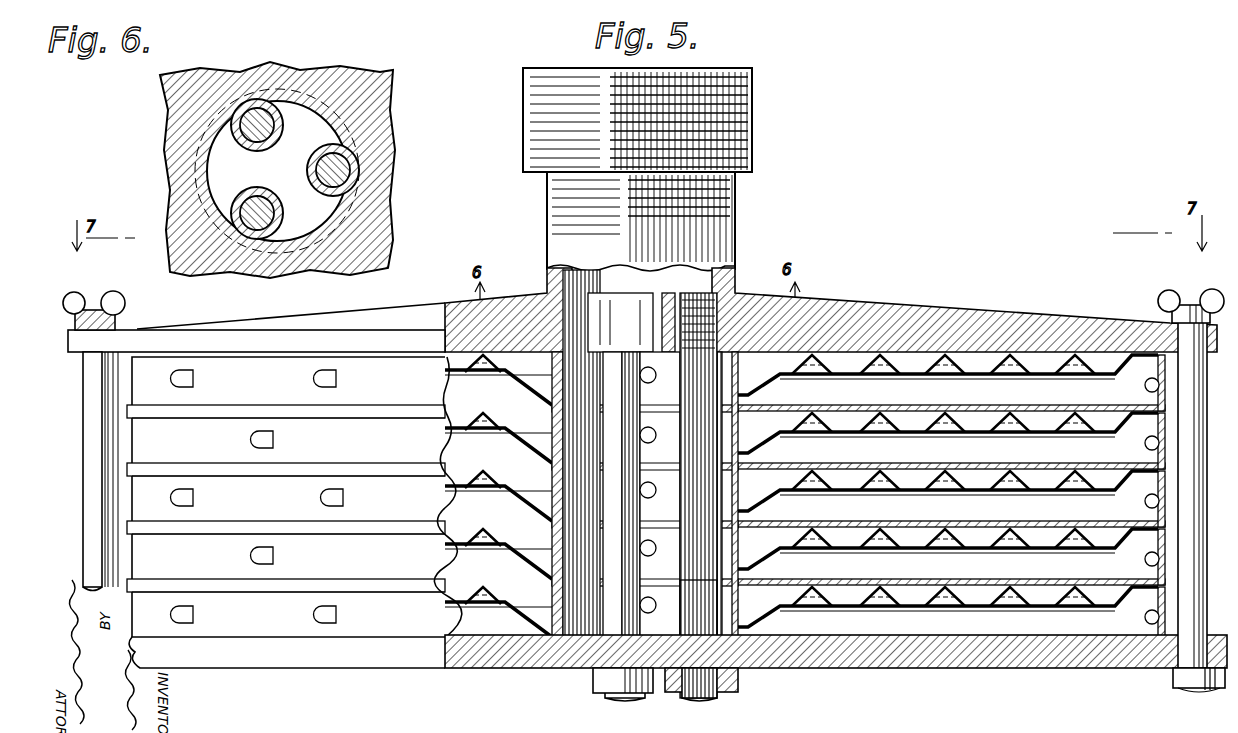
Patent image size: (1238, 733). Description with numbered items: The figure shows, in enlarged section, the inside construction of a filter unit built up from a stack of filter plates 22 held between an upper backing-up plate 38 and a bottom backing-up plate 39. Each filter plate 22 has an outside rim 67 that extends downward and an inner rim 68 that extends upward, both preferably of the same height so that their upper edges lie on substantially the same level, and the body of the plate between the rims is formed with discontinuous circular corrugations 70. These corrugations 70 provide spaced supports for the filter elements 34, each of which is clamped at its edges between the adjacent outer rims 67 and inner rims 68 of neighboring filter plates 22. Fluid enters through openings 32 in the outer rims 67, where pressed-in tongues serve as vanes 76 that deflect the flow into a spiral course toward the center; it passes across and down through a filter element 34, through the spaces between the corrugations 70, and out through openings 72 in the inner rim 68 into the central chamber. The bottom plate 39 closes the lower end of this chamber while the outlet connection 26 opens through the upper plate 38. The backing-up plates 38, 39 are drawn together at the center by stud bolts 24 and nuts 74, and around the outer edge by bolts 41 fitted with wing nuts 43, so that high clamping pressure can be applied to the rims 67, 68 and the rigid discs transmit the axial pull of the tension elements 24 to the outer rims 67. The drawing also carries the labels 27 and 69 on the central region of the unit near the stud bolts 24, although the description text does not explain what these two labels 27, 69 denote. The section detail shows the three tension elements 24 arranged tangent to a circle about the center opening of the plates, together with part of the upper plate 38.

In FIG. 5, the filter plate 22 is at (1042, 432).
In FIG. 6, the stud bolt 24 is at (265, 200).
In FIG. 5, the stud bolt 24 is at (602, 436).
In FIG. 5, the outlet connection 26 is at (736, 214).
In FIG. 5, the rod head 27 is at (632, 292).
In FIG. 5, the opening 32 is at (1145, 386).
In FIG. 5, the filter element 34 is at (1036, 414).
In FIG. 6, the upper backing-up plate 38 is at (390, 175).
In FIG. 5, the upper backing-up plate 38 is at (898, 300).
In FIG. 5, the bottom backing-up plate 39 is at (928, 668).
In FIG. 5, the bolt 41 is at (1172, 307).
In FIG. 5, the wing nut 43 is at (1170, 290).
In FIG. 5, the outside rim 67 is at (1122, 627).
In FIG. 5, the inner rim 68 is at (645, 453).
In FIG. 5, the lower sleeve 69 is at (698, 608).
In FIG. 5, the corrugation 70 is at (928, 376).
In FIG. 5, the opening 72 is at (698, 495).
In FIG. 5, the nut 74 is at (740, 684).
In FIG. 5, the vane 76 is at (1145, 444).